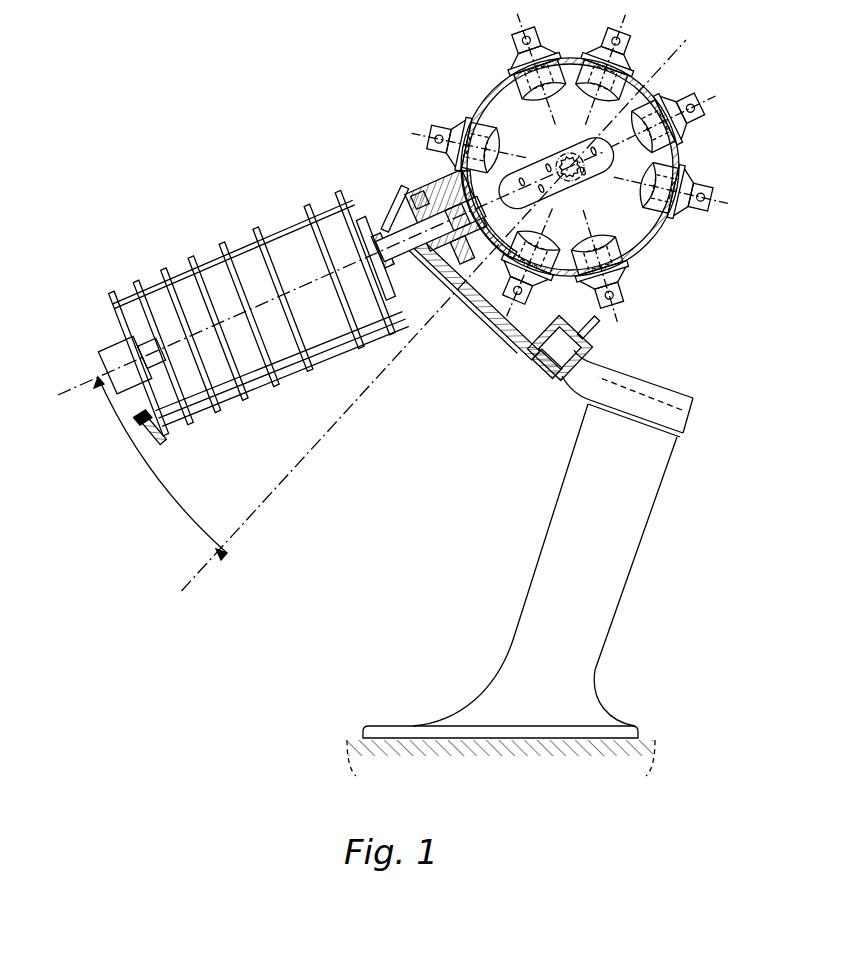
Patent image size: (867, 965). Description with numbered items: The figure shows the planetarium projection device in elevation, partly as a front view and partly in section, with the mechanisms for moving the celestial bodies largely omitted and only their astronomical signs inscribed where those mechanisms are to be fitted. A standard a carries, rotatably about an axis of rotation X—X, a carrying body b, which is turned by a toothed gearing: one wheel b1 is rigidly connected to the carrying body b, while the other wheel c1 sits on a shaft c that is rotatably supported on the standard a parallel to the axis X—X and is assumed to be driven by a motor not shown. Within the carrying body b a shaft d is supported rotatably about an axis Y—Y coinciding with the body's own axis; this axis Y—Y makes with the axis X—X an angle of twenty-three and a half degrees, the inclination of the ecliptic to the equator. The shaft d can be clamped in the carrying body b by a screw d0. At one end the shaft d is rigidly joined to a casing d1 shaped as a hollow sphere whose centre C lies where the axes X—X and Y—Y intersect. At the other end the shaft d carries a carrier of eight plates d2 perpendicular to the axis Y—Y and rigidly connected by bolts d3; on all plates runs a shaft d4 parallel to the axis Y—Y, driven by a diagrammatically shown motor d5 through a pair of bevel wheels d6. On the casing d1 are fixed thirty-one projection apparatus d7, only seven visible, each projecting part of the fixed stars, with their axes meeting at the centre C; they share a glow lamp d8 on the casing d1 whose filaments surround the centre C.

The standard a is at (392, 205).
The carrying body b is at (446, 204).
The wheel b1 is at (412, 200).
The shaft c is at (585, 330).
The wheel c1 is at (545, 383).
The centre of the sphere C is at (569, 157).
The shaft d is at (398, 262).
The screw d0 is at (470, 254).
The casing d1 is at (496, 98).
The plates d2 is at (152, 362).
The bolts d3 is at (120, 292).
The shaft d4 is at (333, 360).
The motor d5 is at (120, 358).
The pair of bevel wheels d6 is at (162, 444).
The projection apparatus d7 is at (529, 62).
The glow lamp d8 is at (556, 173).
The axis of rotation X— X is at (437, 316).
The axis of rotation Y— Y is at (338, 274).